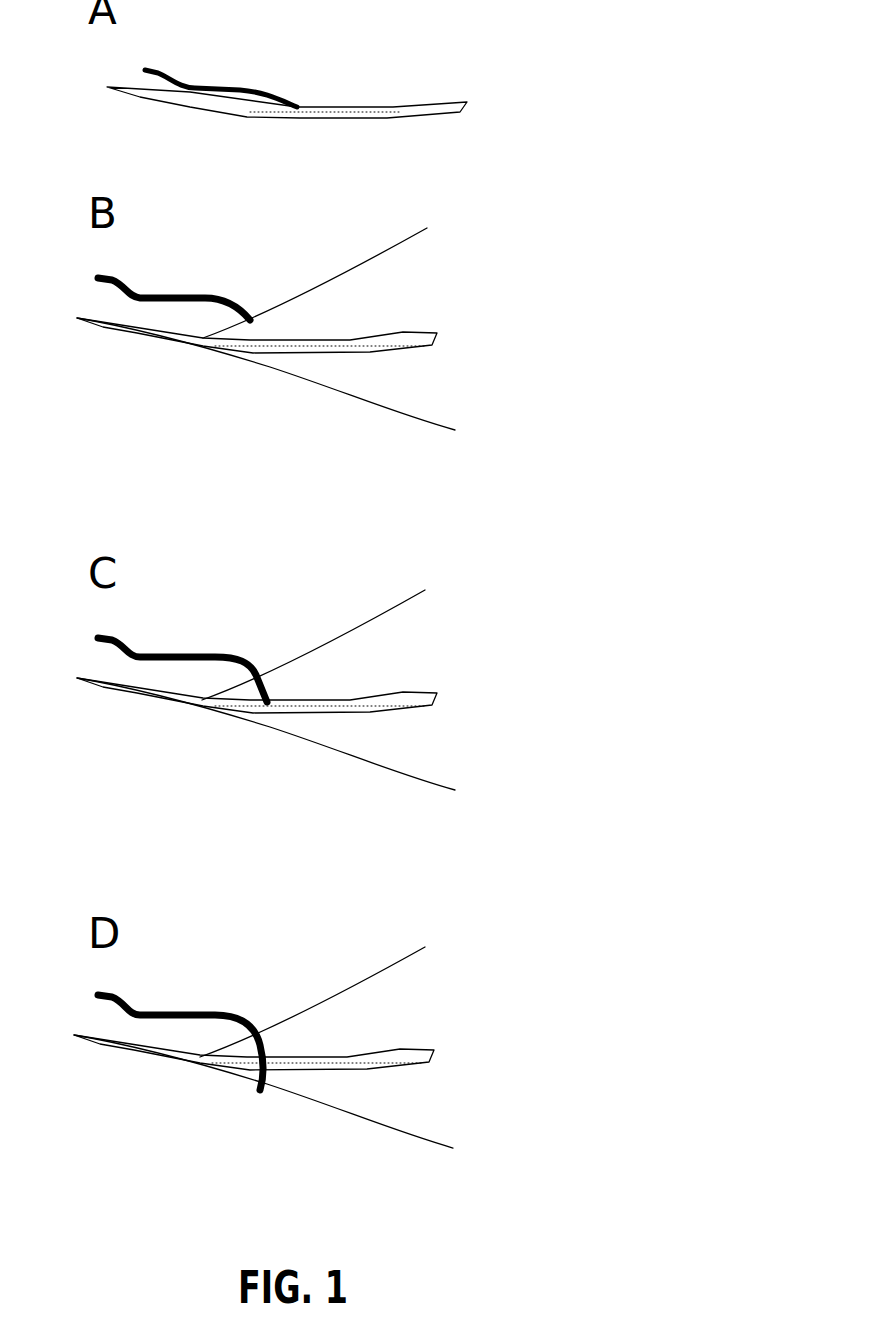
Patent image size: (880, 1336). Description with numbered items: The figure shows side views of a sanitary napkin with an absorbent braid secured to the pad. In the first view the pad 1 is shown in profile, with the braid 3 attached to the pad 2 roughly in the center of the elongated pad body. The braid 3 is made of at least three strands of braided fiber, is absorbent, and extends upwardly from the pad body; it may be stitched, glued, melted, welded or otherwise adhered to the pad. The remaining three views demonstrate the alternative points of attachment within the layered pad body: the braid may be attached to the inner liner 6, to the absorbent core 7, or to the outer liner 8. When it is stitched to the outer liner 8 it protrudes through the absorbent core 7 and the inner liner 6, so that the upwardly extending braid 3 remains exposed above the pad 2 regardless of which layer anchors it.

The pad 1 is at (370, 105).
The pad 2 is at (304, 104).
The braid 3 is at (232, 81).
The inner liner 6 is at (354, 264).
The absorbent core 7 is at (418, 330).
The outer liner 8 is at (364, 406).